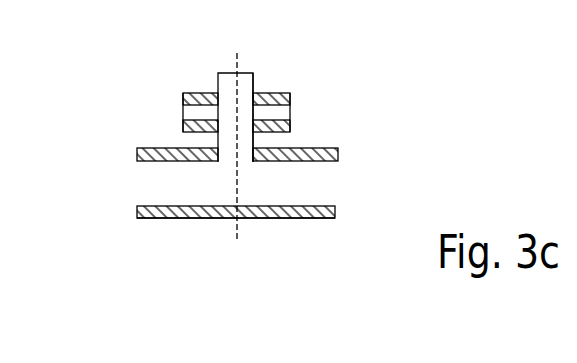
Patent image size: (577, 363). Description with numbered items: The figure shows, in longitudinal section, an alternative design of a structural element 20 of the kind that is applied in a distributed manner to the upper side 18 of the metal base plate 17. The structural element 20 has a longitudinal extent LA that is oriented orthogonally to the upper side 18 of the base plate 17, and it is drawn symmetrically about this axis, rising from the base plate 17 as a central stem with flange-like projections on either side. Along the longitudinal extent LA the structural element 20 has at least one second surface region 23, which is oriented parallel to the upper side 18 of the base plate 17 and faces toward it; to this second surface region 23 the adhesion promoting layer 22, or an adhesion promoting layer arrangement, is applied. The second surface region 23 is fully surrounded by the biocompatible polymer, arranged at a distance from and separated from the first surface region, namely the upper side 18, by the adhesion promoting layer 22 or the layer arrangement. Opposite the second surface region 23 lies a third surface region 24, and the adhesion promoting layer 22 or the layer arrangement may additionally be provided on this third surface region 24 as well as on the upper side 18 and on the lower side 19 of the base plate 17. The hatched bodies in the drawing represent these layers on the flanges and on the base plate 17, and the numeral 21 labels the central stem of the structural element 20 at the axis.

The metal base plate 17 is at (318, 192).
The upper side of the base plate 18 is at (332, 152).
The lower side of the base plate 19 is at (166, 218).
The structural element 20 is at (244, 87).
The pin / column 21 is at (230, 72).
The adhesion promoting layer 22 is at (192, 131).
The second surface region 23 is at (182, 120).
The third surface region 24 is at (190, 95).
The longitudinal extent LA is at (237, 232).